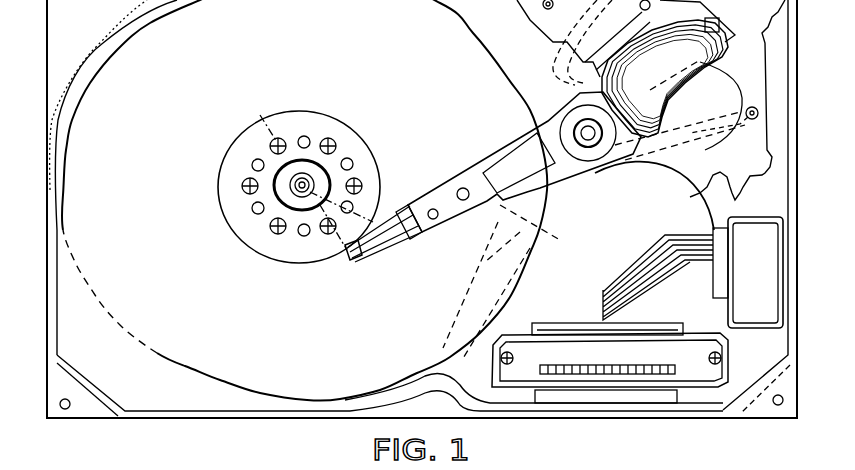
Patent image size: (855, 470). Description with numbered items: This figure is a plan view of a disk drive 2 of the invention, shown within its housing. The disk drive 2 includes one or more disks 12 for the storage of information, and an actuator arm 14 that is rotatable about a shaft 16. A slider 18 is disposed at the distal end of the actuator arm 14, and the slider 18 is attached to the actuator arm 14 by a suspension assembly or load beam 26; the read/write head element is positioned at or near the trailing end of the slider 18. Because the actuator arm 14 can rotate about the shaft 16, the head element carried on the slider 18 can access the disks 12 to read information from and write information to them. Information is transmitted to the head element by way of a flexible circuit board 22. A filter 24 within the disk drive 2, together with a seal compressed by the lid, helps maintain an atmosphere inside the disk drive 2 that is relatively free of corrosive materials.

The disk drive 2 is at (195, 444).
The disks 12 is at (296, 48).
The actuator arm 14 is at (508, 145).
The shaft 16 is at (592, 147).
The slider 18 is at (350, 262).
The flexible circuit board 22 is at (712, 213).
The filter 24 is at (745, 214).
The suspension assembly or load beam 26 is at (387, 248).